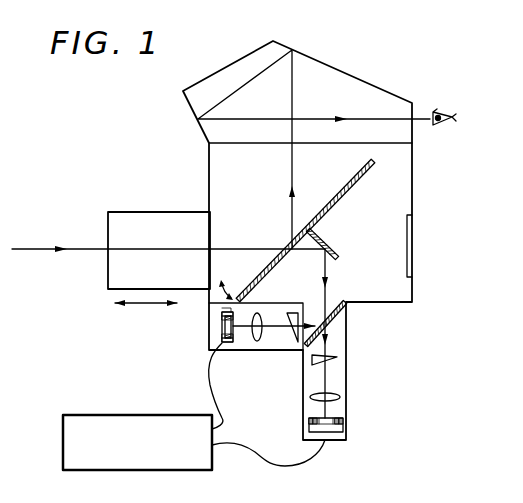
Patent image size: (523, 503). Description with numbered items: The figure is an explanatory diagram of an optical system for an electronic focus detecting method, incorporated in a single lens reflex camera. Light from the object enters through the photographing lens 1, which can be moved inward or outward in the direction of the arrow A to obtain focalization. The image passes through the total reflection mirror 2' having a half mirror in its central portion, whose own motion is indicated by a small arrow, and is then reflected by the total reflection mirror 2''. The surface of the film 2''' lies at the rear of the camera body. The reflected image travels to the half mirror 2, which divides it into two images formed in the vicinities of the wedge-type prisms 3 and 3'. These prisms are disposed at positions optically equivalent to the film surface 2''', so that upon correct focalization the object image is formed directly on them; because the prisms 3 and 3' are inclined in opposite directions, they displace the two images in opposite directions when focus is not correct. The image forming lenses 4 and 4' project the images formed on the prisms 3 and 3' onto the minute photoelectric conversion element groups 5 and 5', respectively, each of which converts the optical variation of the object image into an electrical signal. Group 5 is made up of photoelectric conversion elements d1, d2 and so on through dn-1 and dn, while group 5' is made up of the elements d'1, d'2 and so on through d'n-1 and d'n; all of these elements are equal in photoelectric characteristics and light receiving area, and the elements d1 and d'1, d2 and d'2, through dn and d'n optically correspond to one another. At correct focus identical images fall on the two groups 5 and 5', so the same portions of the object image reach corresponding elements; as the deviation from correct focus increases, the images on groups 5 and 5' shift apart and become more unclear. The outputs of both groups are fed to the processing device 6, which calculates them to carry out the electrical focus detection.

The photographing lens 1 is at (138, 218).
The half mirror 2 is at (340, 324).
The total reflection mirror having a half mirror in the central portion 2' is at (306, 230).
The total reflection mirror 2'' is at (344, 255).
The film surface 2''' is at (442, 246).
The wedge-type prism 3 is at (284, 347).
The wedge-type prism 3' is at (351, 352).
The image forming lens 4 is at (244, 364).
The image forming lens 4' is at (361, 381).
The minute photoelectric conversion element group 5 is at (186, 345).
The minute photoelectric conversion element group 5' is at (355, 437).
The processing device 6 is at (63, 442).
The photoelectric conversion element d1 is at (225, 312).
The photoelectric conversion element d2 is at (223, 320).
The photoelectric conversion element dn is at (230, 342).
The photoelectric conversion element dn-1 is at (235, 340).
The photoelectric conversion element d'1 is at (380, 419).
The photoelectric conversion element d'2 is at (368, 406).
The photoelectric conversion element d'n is at (291, 429).
The photoelectric conversion element d'n-1 is at (286, 409).
The arrow A is at (146, 313).